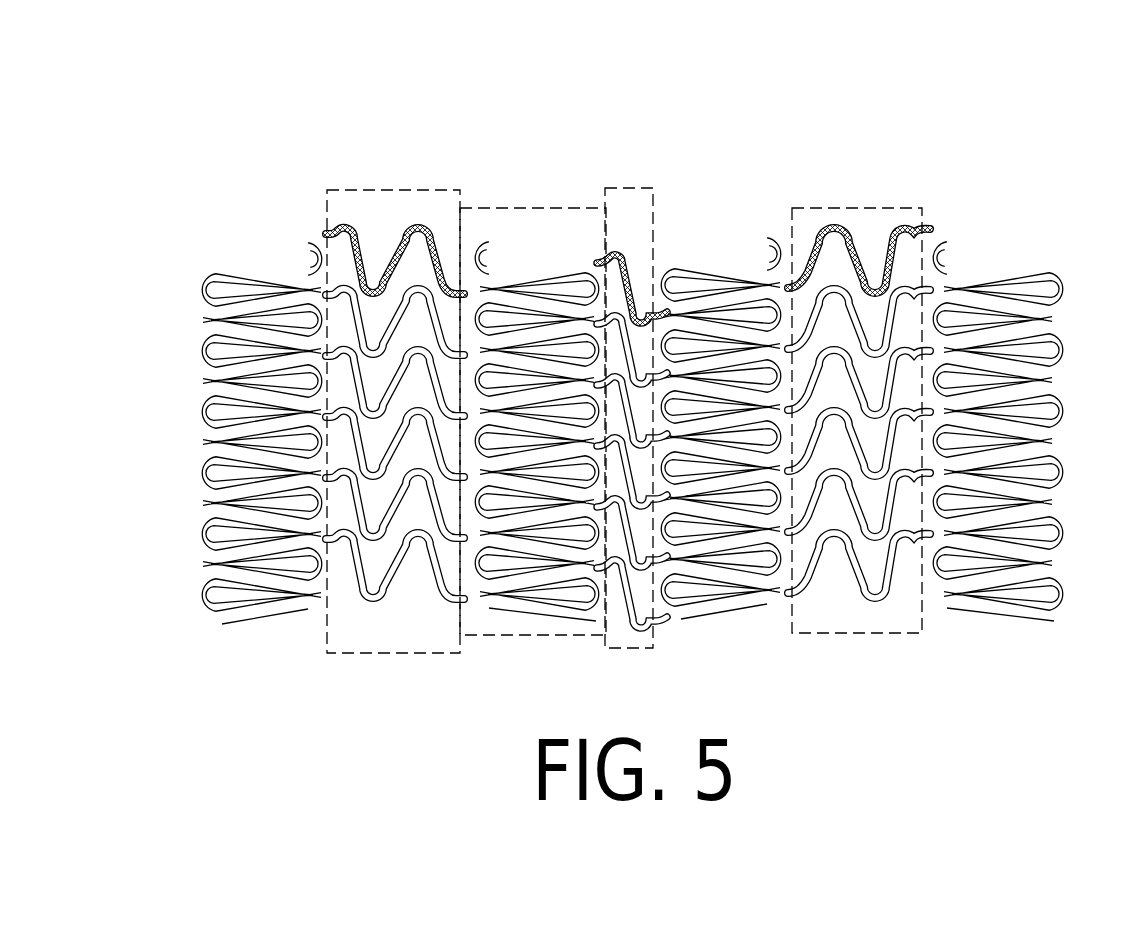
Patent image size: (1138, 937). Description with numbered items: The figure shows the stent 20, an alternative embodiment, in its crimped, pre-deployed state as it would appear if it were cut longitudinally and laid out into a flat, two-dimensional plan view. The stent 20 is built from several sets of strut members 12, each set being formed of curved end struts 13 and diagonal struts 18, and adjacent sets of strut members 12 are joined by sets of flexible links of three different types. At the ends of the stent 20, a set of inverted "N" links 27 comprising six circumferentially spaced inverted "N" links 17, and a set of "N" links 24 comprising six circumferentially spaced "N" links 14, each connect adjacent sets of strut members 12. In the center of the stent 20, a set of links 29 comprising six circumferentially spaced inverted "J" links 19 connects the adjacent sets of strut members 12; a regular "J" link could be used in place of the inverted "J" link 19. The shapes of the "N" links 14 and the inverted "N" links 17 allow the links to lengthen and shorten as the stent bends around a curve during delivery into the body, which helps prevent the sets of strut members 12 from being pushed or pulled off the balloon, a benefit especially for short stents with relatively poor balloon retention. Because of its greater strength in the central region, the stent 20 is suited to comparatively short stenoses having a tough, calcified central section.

The stent 20 is at (448, 105).
The curved end struts 13 is at (196, 352).
The diagonal struts 18 is at (250, 265).
The set of inverted "N" links 27 is at (341, 188).
The inverted "N" link 17 is at (421, 218).
The set of strut members 12 is at (495, 640).
The inverted "J" link 19 is at (636, 258).
The set of inverted "N" links 29 is at (632, 650).
The "N" link 14 is at (813, 222).
The set of "N" links 24 is at (858, 208).